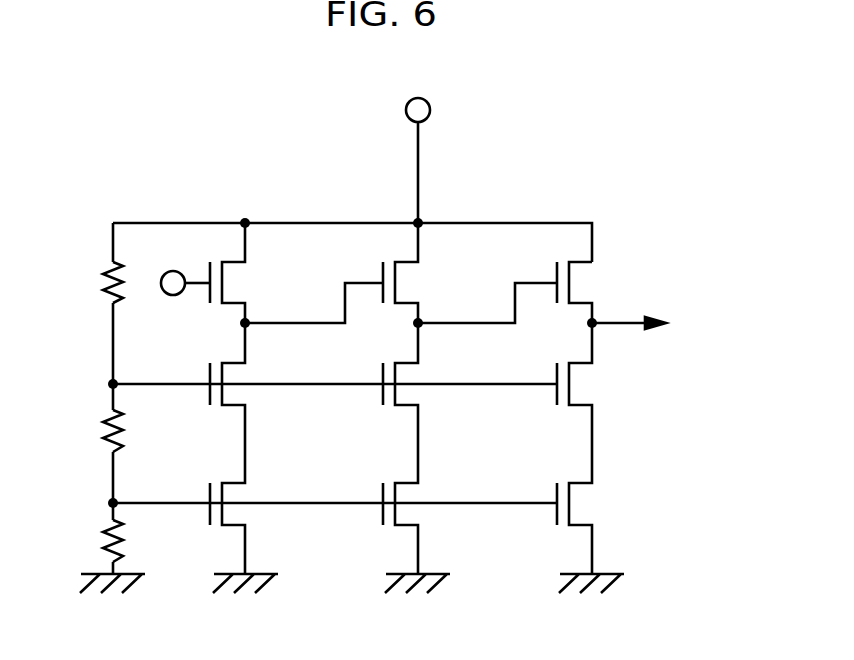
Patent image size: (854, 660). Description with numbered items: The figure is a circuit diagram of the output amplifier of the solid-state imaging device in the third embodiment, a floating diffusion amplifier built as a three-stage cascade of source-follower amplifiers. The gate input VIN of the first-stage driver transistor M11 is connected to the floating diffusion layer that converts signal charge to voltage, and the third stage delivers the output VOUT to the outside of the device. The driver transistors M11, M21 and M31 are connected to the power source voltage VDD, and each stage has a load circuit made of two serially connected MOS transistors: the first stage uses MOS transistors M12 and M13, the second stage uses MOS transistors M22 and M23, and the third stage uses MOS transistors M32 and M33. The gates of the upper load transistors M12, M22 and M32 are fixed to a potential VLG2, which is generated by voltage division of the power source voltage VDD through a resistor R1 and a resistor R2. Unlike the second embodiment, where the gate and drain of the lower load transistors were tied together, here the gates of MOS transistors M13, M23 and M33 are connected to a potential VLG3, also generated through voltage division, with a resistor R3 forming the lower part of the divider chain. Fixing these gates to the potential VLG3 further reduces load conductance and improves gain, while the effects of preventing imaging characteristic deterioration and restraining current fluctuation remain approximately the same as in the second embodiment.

The power source voltage VDD is at (453, 158).
The gate input VIN is at (176, 267).
The output VOUT is at (671, 323).
The potential VLG2 is at (289, 384).
The potential VLG3 is at (289, 502).
The resistor R1 is at (89, 282).
The resistor R2 is at (89, 431).
The resistor R3 is at (89, 541).
The first-stage driver transistor M11 is at (259, 280).
The first MOS transistor M12 is at (259, 377).
The MOS transistor M13 is at (259, 493).
The second-stage driver transistor M21 is at (363, 290).
The MOS transistor M22 is at (432, 377).
The MOS transistor M23 is at (432, 493).
The third-stage driver transistor M31 is at (536, 290).
The MOS transistor M32 is at (605, 377).
The MOS transistor M33 is at (605, 493).